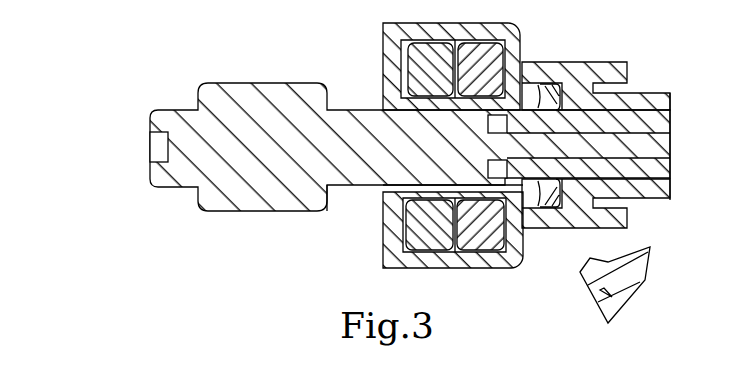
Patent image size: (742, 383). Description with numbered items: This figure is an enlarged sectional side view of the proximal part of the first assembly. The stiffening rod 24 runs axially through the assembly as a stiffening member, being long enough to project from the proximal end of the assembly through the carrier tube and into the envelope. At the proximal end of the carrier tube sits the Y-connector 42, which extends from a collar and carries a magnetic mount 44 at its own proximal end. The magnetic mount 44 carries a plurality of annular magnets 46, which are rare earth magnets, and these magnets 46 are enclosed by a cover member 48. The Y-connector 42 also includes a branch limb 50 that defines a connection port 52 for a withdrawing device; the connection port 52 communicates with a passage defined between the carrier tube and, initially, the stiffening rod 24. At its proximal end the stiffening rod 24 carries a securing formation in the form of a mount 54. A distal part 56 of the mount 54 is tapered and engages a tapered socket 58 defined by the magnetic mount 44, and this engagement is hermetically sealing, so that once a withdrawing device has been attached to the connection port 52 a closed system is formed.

The stiffening rod 24 is at (674, 150).
The Y-connector 42 is at (652, 92).
The magnetic mount 44 is at (414, 18).
The annular magnets 46 is at (473, 255).
The cover member 48 is at (383, 241).
The branch limb 50 is at (632, 252).
The connection port 52 is at (588, 294).
The mount 54 is at (238, 203).
The distal part 56 is at (368, 193).
The tapered socket 58 is at (520, 62).